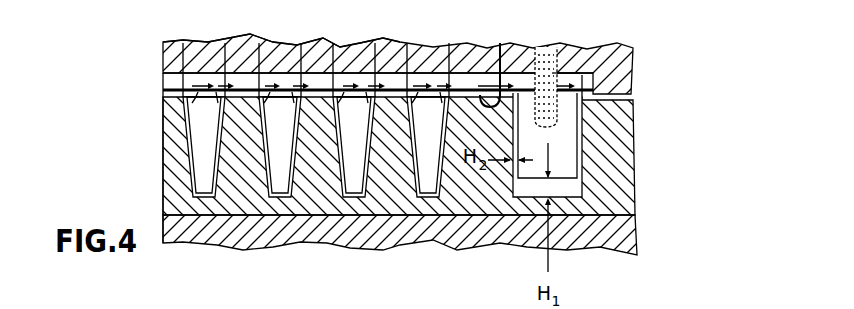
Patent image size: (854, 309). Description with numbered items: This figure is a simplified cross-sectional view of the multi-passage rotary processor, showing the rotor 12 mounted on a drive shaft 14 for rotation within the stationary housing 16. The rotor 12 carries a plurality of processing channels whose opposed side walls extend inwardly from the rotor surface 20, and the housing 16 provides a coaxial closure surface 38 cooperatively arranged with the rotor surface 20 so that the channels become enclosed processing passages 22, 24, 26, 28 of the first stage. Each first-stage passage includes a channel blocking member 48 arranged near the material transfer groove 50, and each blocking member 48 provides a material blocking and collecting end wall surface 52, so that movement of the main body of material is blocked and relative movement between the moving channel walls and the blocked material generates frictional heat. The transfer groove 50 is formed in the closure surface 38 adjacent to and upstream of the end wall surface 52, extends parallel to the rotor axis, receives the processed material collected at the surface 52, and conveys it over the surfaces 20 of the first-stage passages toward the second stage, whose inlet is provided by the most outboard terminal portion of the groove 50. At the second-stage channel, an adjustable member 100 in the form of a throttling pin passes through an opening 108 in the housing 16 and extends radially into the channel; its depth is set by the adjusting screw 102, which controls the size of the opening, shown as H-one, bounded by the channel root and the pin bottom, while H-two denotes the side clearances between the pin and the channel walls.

The rotor 12 is at (237, 180).
The drive shaft 14 is at (253, 233).
The housing 16 is at (621, 50).
The rotor surface 20 is at (401, 44).
The processing passage 22 is at (186, 143).
The processing passage 24 is at (280, 197).
The processing passage 26 is at (353, 197).
The processing passage 28 is at (423, 197).
The coaxial closure surface 38 is at (499, 45).
The channel blocking member 48 is at (212, 42).
The material transfer groove 50 is at (170, 75).
The end wall surface 52 is at (203, 158).
The adjustable member 100 is at (567, 152).
The adjusting screw 102 is at (552, 72).
The opening 108 is at (523, 52).